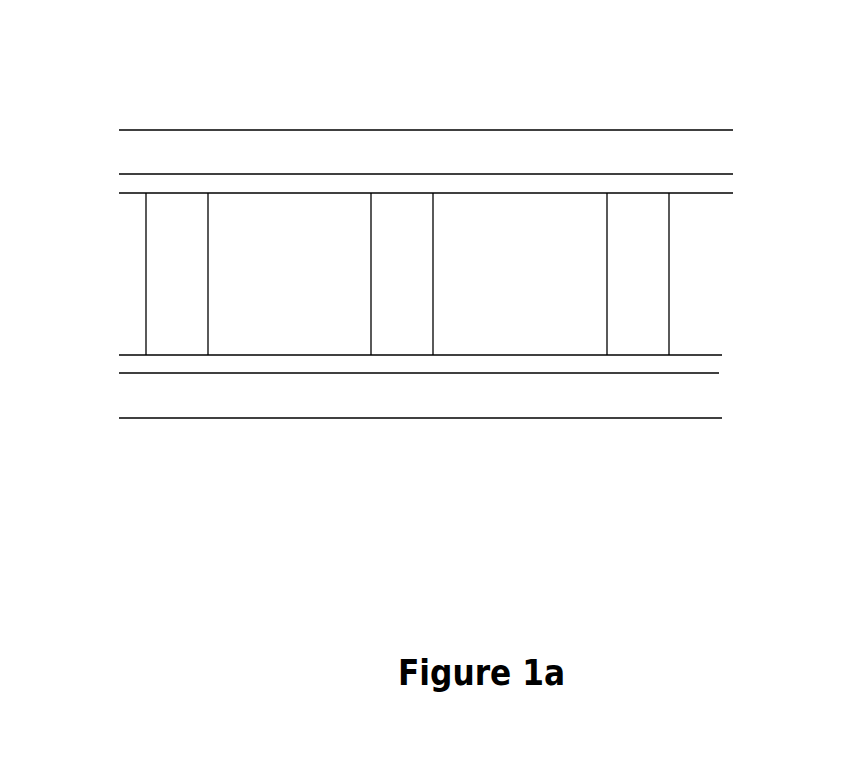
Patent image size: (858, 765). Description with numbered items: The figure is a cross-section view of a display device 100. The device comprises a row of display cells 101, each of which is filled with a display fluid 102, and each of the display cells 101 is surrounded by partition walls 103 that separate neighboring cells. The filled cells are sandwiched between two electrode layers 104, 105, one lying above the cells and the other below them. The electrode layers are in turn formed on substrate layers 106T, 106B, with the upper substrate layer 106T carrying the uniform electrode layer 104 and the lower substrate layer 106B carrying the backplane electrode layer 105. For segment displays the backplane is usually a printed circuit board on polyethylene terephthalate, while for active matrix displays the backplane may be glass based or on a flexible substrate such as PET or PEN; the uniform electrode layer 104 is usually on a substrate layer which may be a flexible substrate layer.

The display device 100 is at (421, 281).
The display cells 101 is at (207, 274).
The display fluid 102 is at (257, 308).
The partition walls 103 is at (408, 307).
The electrode layer 104 is at (597, 180).
The electrode layer 105 is at (533, 373).
The substrate layer 106T is at (522, 143).
The substrate layer 106B is at (635, 407).